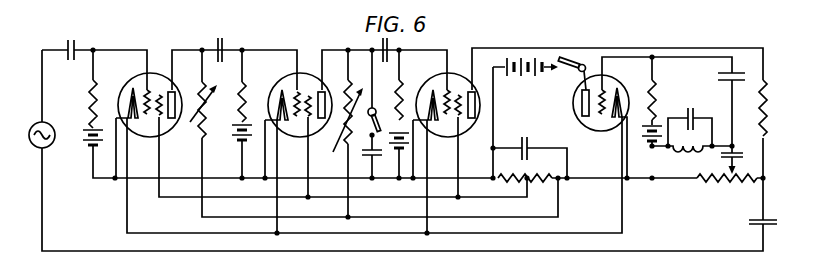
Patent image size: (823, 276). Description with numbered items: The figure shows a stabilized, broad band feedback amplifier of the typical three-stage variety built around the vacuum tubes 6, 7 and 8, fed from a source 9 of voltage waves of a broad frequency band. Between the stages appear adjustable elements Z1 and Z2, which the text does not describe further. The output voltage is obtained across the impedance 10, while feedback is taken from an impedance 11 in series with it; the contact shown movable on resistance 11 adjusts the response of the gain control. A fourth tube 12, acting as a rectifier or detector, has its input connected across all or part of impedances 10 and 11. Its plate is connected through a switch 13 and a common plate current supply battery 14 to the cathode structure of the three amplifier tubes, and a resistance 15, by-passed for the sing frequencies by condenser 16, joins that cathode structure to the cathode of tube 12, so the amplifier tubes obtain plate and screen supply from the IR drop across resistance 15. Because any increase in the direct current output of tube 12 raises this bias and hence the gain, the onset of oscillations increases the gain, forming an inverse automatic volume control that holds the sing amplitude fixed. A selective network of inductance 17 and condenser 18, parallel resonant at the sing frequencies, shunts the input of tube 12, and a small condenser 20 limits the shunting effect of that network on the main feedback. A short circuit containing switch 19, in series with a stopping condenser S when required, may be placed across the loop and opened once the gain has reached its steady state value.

The vacuum tube 6 is at (137, 80).
The vacuum tube 7 is at (290, 78).
The vacuum tube 8 is at (437, 80).
The source of waves 9 is at (47, 145).
The impedance 10 is at (769, 100).
The impedance 11 is at (735, 183).
The fourth tube 12 is at (614, 80).
The switch 13 is at (562, 73).
The plate current supply battery 14 is at (517, 77).
The resistance 15 is at (547, 183).
The condenser 16 is at (528, 134).
The inductance 17 is at (686, 156).
The condenser 18 is at (695, 106).
The switch 19 is at (379, 116).
The small condenser 20 is at (745, 155).
The variable impedance Z1 is at (208, 140).
The variable impedance Z2 is at (340, 125).
The stopping condenser S is at (381, 155).